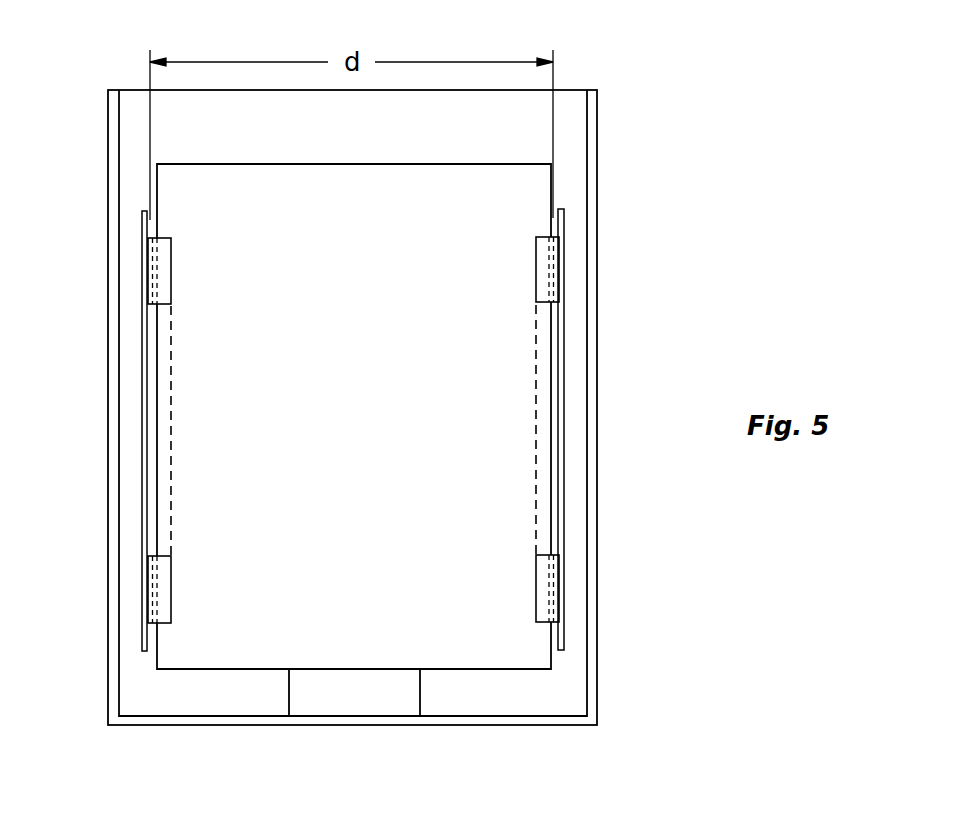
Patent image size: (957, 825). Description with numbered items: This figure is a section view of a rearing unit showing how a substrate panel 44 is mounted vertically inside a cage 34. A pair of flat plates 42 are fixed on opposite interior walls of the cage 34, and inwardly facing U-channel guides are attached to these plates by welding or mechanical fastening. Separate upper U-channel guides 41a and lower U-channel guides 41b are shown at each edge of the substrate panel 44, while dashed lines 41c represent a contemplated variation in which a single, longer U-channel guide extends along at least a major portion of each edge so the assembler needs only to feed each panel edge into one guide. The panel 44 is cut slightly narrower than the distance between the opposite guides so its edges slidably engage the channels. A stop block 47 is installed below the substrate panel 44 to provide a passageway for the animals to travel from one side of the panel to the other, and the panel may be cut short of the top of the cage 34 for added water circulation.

The cage 34 is at (597, 192).
The upper U-channel guide 41a is at (163, 265).
The lower U-channel guide 41b is at (165, 583).
The single long U-channel guide 41c is at (167, 458).
The flat plate 42 is at (142, 355).
The substrate panel 44 is at (374, 438).
The stop block 47 is at (420, 692).